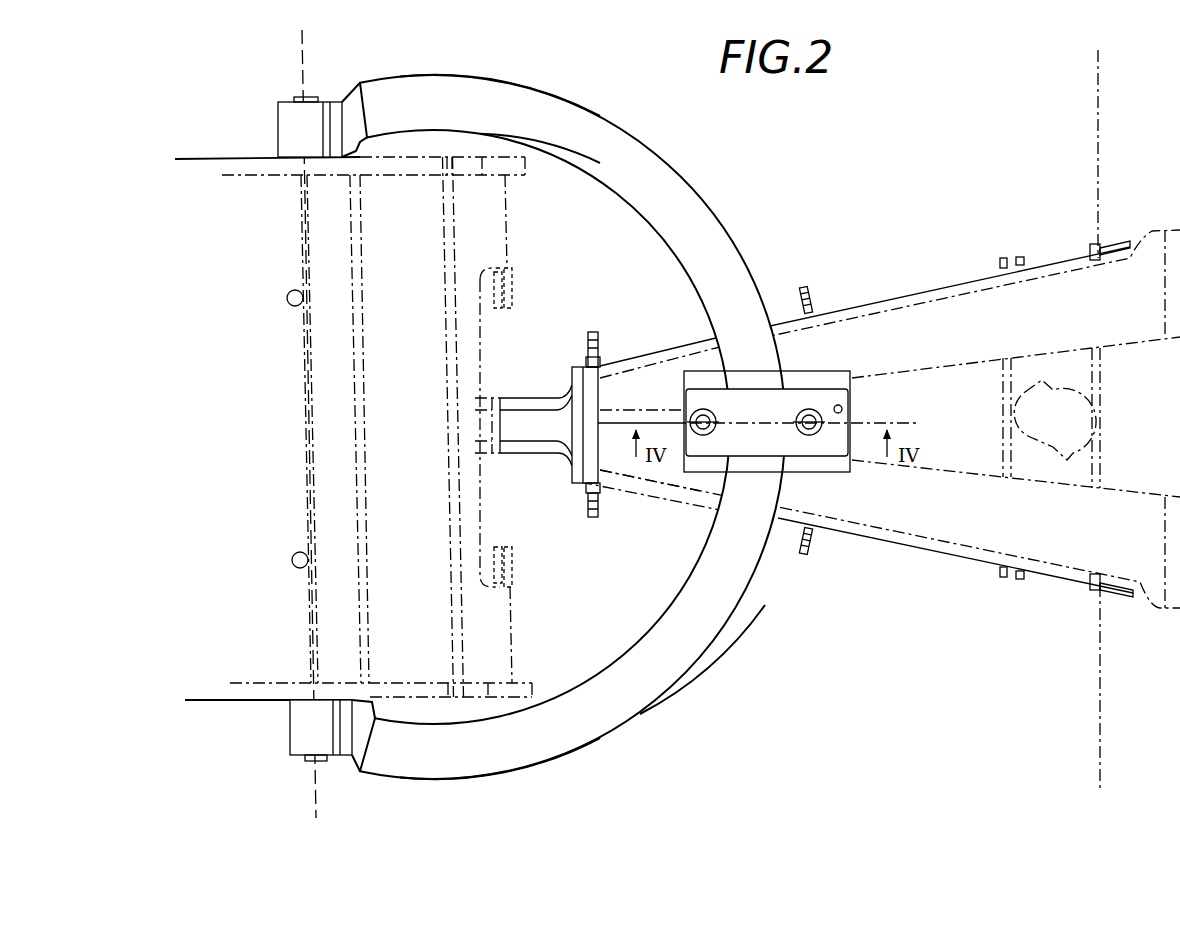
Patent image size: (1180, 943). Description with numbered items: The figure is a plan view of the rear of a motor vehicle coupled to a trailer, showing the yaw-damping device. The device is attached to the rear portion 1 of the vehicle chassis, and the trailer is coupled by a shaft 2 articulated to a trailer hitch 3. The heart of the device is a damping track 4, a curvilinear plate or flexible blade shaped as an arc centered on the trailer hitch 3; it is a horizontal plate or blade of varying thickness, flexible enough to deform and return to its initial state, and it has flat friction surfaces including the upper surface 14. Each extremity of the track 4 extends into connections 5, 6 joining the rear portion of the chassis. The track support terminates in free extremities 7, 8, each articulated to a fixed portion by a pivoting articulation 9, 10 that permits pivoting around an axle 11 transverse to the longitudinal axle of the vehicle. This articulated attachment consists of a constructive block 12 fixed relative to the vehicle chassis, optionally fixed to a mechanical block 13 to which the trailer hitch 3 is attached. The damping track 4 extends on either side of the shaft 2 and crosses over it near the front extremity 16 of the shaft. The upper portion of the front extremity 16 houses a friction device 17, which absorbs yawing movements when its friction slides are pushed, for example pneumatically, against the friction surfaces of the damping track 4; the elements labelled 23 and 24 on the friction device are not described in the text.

The rear portion 1 is at (238, 718).
The shaft 2 is at (1062, 232).
The trailer hitch 3 is at (517, 463).
The damping track 4 is at (727, 186).
The connection 5 is at (525, 753).
The connection 6 is at (518, 105).
The free extremity 7 is at (282, 748).
The free extremity 8 is at (328, 95).
The pivoting articulation 9 is at (318, 761).
The pivoting articulation 10 is at (296, 96).
The axle 11 is at (309, 57).
The constructive block 12 is at (532, 205).
The mechanical block 13 is at (497, 636).
The upper surface 14 is at (695, 640).
The front extremity 16 is at (641, 500).
The friction device 17 is at (834, 358).
The bolt 23 is at (790, 403).
The hole 24 is at (850, 375).